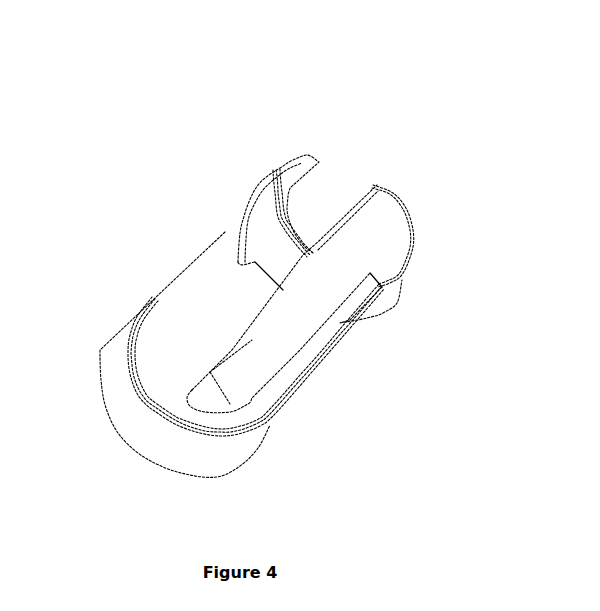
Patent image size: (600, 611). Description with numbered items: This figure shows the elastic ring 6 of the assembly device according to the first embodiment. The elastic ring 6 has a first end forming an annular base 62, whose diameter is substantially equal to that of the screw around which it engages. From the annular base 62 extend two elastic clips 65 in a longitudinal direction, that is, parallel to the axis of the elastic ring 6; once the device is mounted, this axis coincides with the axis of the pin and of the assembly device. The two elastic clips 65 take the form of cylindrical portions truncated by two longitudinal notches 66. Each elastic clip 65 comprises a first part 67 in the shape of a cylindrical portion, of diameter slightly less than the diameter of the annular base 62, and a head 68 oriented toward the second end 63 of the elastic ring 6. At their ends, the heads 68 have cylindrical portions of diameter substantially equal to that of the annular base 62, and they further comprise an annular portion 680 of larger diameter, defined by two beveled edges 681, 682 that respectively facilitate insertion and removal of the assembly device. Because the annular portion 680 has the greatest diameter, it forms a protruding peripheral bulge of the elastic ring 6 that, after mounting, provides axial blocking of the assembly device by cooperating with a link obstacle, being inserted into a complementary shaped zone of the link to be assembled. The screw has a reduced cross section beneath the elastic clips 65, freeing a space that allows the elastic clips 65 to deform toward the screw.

The elastic ring 6 is at (123, 307).
The annular base 62 is at (120, 423).
The second end 63 is at (299, 163).
The elastic clip 65 is at (225, 235).
The longitudinal notch 66 is at (331, 201).
The first part 67 is at (184, 290).
The head 68 is at (386, 290).
The annular portion 680 is at (254, 178).
The beveled edge 681 is at (266, 183).
The beveled edge 682 is at (243, 197).